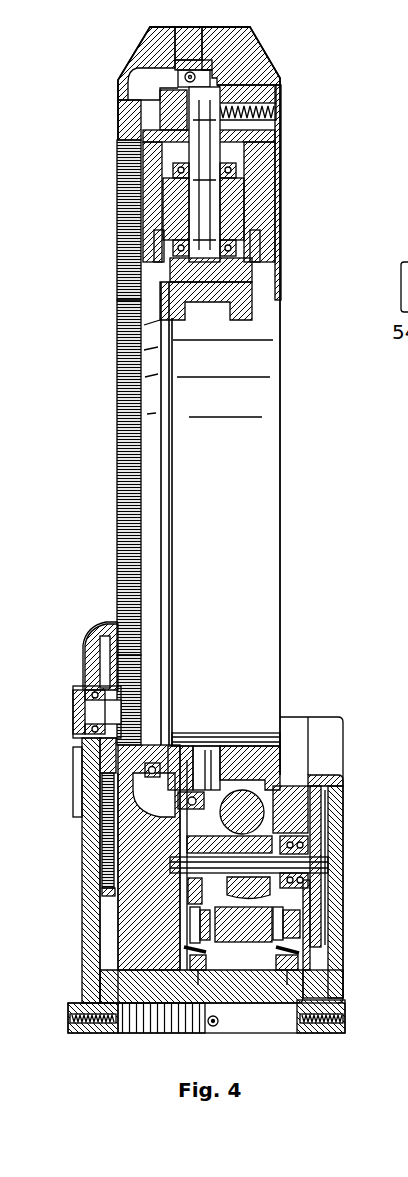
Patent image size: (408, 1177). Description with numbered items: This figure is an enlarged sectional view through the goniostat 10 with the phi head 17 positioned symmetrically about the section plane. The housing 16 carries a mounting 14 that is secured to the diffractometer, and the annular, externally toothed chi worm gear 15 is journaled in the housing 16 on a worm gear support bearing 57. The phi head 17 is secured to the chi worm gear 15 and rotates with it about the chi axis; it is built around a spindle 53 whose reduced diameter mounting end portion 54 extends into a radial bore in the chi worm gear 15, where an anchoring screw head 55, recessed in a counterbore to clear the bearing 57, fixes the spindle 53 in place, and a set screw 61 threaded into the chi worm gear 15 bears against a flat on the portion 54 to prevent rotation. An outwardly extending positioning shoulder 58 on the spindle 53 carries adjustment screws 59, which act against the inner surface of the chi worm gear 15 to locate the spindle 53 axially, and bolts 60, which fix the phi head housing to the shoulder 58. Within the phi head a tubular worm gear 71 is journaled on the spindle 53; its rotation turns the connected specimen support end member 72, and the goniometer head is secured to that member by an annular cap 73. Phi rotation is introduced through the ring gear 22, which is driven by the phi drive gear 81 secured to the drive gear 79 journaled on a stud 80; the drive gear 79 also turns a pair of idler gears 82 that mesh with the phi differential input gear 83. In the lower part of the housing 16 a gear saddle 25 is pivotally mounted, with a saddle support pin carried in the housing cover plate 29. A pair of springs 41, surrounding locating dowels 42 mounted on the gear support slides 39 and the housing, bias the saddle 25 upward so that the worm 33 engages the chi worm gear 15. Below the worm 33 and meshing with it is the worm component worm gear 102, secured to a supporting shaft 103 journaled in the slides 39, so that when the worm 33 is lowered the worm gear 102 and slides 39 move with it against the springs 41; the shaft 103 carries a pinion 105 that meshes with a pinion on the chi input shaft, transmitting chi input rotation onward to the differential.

The goniostat 10 is at (277, 61).
The worm gear support bearing 57 is at (194, 58).
The anchoring screw head 55 is at (216, 100).
The set screw 61 is at (274, 110).
The positioning shoulder 58 is at (282, 140).
The adjustment screws 59 is at (283, 152).
The phi head 17 is at (282, 167).
The spindle 53 is at (230, 212).
The tubular worm gear 71 is at (268, 217).
The specimen support end member 72 is at (252, 270).
The annular cap 73 is at (260, 305).
The reduced diameter mounting end portion 54 is at (118, 122).
The bolts 60 is at (118, 167).
The ring gear 22 is at (118, 506).
The phi drive gear 81 is at (134, 673).
The drive gear 79 is at (94, 637).
The stud 80 is at (82, 688).
The housing 16 is at (135, 913).
The idler gears 82 is at (102, 836).
The phi differential input gear 83 is at (114, 886).
The supporting shaft 103 is at (180, 836).
The worm component worm gear 102 is at (192, 892).
The chi worm gear 15 is at (250, 742).
The worm 33 is at (268, 796).
The pinion 105 is at (322, 798).
The gear saddle 25 is at (308, 841).
The gear support slides 39 is at (310, 889).
The springs 41 is at (300, 912).
The locating dowels 42 is at (274, 964).
The housing cover plate 29 is at (336, 966).
The mounting 14 is at (70, 1003).